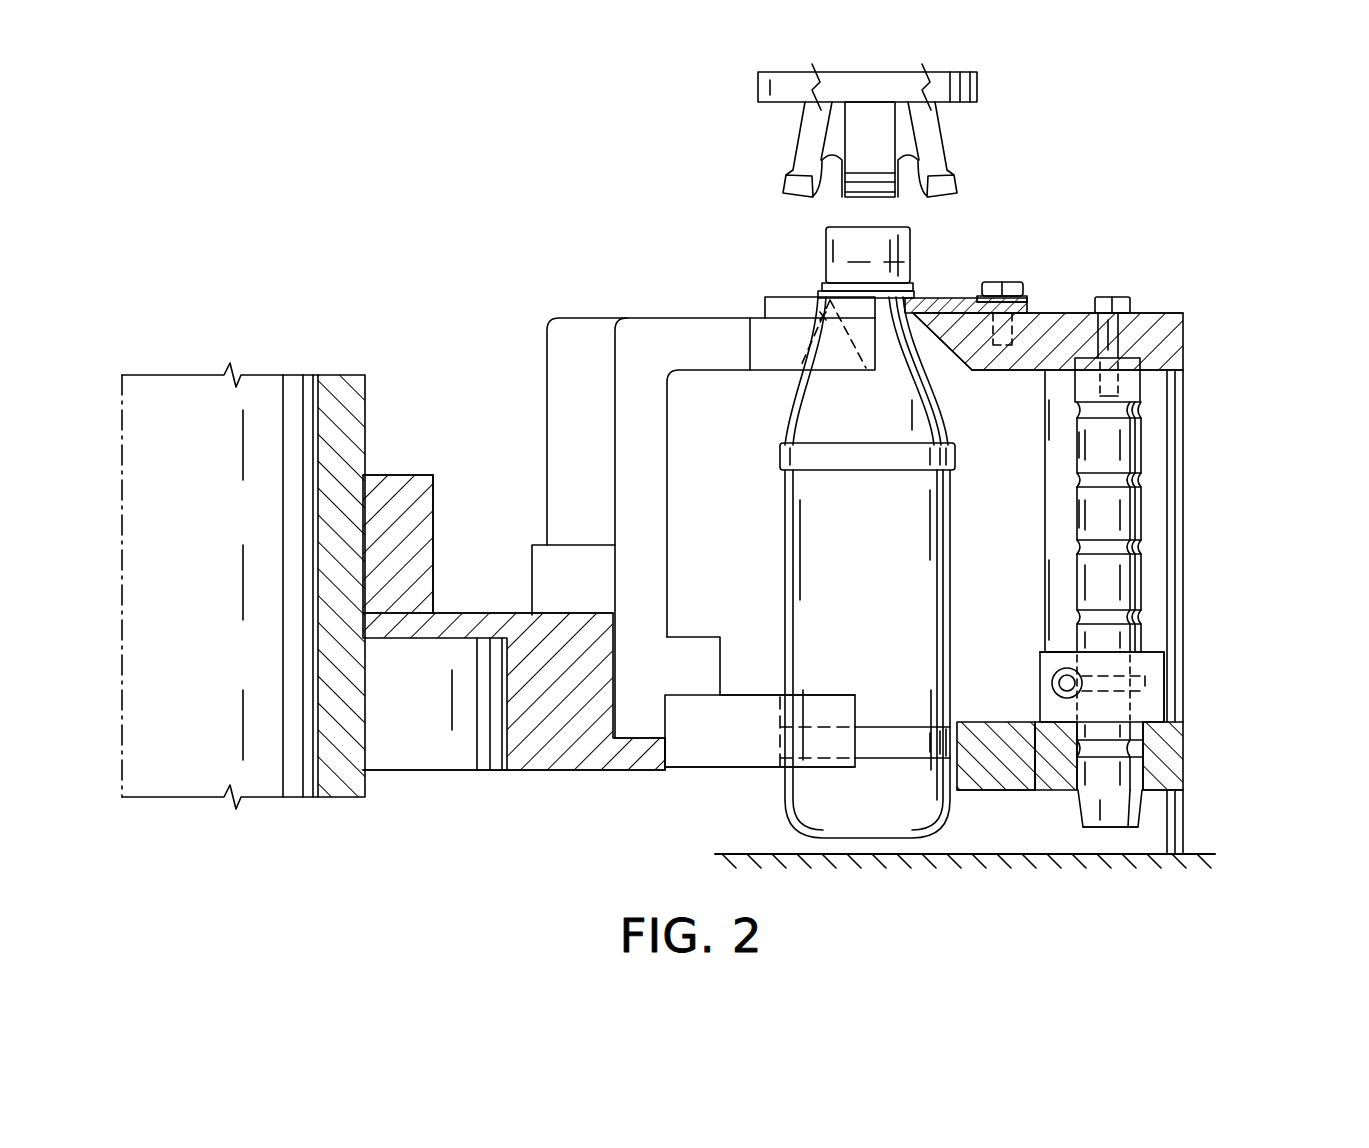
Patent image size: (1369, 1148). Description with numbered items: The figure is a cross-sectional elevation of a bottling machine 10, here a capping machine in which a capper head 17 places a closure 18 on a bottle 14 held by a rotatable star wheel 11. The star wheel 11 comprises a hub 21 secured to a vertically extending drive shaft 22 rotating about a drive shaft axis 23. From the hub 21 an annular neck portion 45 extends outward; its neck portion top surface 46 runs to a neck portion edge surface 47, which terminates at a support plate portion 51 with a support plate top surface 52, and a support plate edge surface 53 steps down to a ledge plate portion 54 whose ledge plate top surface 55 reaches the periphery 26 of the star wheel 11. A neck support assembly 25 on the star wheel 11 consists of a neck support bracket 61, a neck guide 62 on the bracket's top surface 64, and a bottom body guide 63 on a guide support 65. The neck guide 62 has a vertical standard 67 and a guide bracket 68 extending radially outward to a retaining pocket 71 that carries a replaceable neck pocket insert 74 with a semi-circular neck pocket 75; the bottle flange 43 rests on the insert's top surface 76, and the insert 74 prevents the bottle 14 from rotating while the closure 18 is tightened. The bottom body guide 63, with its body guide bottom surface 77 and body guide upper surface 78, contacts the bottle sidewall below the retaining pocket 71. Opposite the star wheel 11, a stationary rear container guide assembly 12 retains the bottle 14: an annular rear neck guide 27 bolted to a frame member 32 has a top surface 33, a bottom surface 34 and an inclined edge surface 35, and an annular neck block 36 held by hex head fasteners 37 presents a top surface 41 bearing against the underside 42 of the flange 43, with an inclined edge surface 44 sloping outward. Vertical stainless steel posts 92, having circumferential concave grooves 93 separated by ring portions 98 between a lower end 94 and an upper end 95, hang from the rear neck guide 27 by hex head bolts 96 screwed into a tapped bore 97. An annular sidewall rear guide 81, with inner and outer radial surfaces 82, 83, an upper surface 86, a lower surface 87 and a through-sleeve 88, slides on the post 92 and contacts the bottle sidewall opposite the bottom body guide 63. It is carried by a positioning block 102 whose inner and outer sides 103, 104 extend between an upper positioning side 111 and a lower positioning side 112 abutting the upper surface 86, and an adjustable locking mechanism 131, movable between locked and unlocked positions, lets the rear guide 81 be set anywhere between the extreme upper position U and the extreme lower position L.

The bottling machine 10 is at (1215, 122).
The rotatable star wheel 11 is at (518, 785).
The rear container guide assembly 12 is at (1195, 283).
The bottle 14 is at (780, 482).
The capper head 17 is at (945, 133).
The closure 18 is at (835, 240).
The hub 21 is at (340, 798).
The drive shaft 22 is at (255, 798).
The drive shaft axis 23 is at (127, 373).
The neck support assembly 25 is at (535, 328).
The periphery 26 is at (667, 752).
The rear neck guide 27 is at (1185, 313).
The frame member 32 is at (1187, 458).
The top surface 33 is at (1050, 313).
The bottom surface 34 is at (995, 372).
The inclined edge surface 35 is at (952, 378).
The annular neck block 36 is at (965, 295).
The hex head fastener 37 is at (1012, 283).
The top surface 41 is at (942, 300).
The underside 42 is at (870, 340).
The flange 43 is at (828, 296).
The inclined edge surface 44 is at (920, 407).
The annular neck portion 45 is at (392, 473).
The neck portion top surface 46 is at (420, 475).
The neck portion edge surface 47 is at (436, 514).
The support plate portion 51 is at (484, 612).
The support plate top surface 52 is at (452, 612).
The support plate edge surface 53 is at (618, 640).
The ledge plate portion 54 is at (630, 772).
The ledge plate top surface 55 is at (637, 738).
The neck support bracket 61 is at (652, 583).
The neck guide 62 is at (640, 462).
The bottom body guide 63 is at (748, 772).
The top surface 64 is at (575, 545).
The guide support 65 is at (697, 662).
The vertical standard 67 is at (550, 368).
The guide bracket 68 is at (715, 330).
The retaining pocket 71 is at (830, 372).
The neck pocket insert 74 is at (772, 300).
The neck pocket 75 is at (842, 354).
The top surface 76 is at (778, 303).
The body guide bottom surface 77 is at (780, 715).
The body guide upper surface 78 is at (743, 695).
The annular sidewall rear guide 81 is at (1188, 785).
The inner radial surface 82 is at (940, 782).
The outer radial surface 83 is at (1190, 742).
The upper surface 86 is at (1053, 752).
The lower surface 87 is at (985, 792).
The through-sleeve 88 is at (1145, 795).
The vertical stainless steel post 92 is at (1075, 516).
The circumferential concave groove 93 is at (1141, 548).
The lower end 94 is at (1105, 830).
The upper end 95 is at (1145, 350).
The hex head bolt 96 is at (1114, 297).
The tapped bore 97 is at (1125, 385).
The ring portion 98 is at (1077, 497).
The positioning block 102 is at (1166, 679).
The inner side 103 is at (1043, 660).
The outer side 104 is at (1165, 661).
The upper positioning side 111 is at (1165, 655).
The lower positioning side 112 is at (1055, 727).
The adjustable locking mechanism 131 is at (1052, 683).
The arrow U is at (1265, 408).
The arrow L is at (1275, 753).